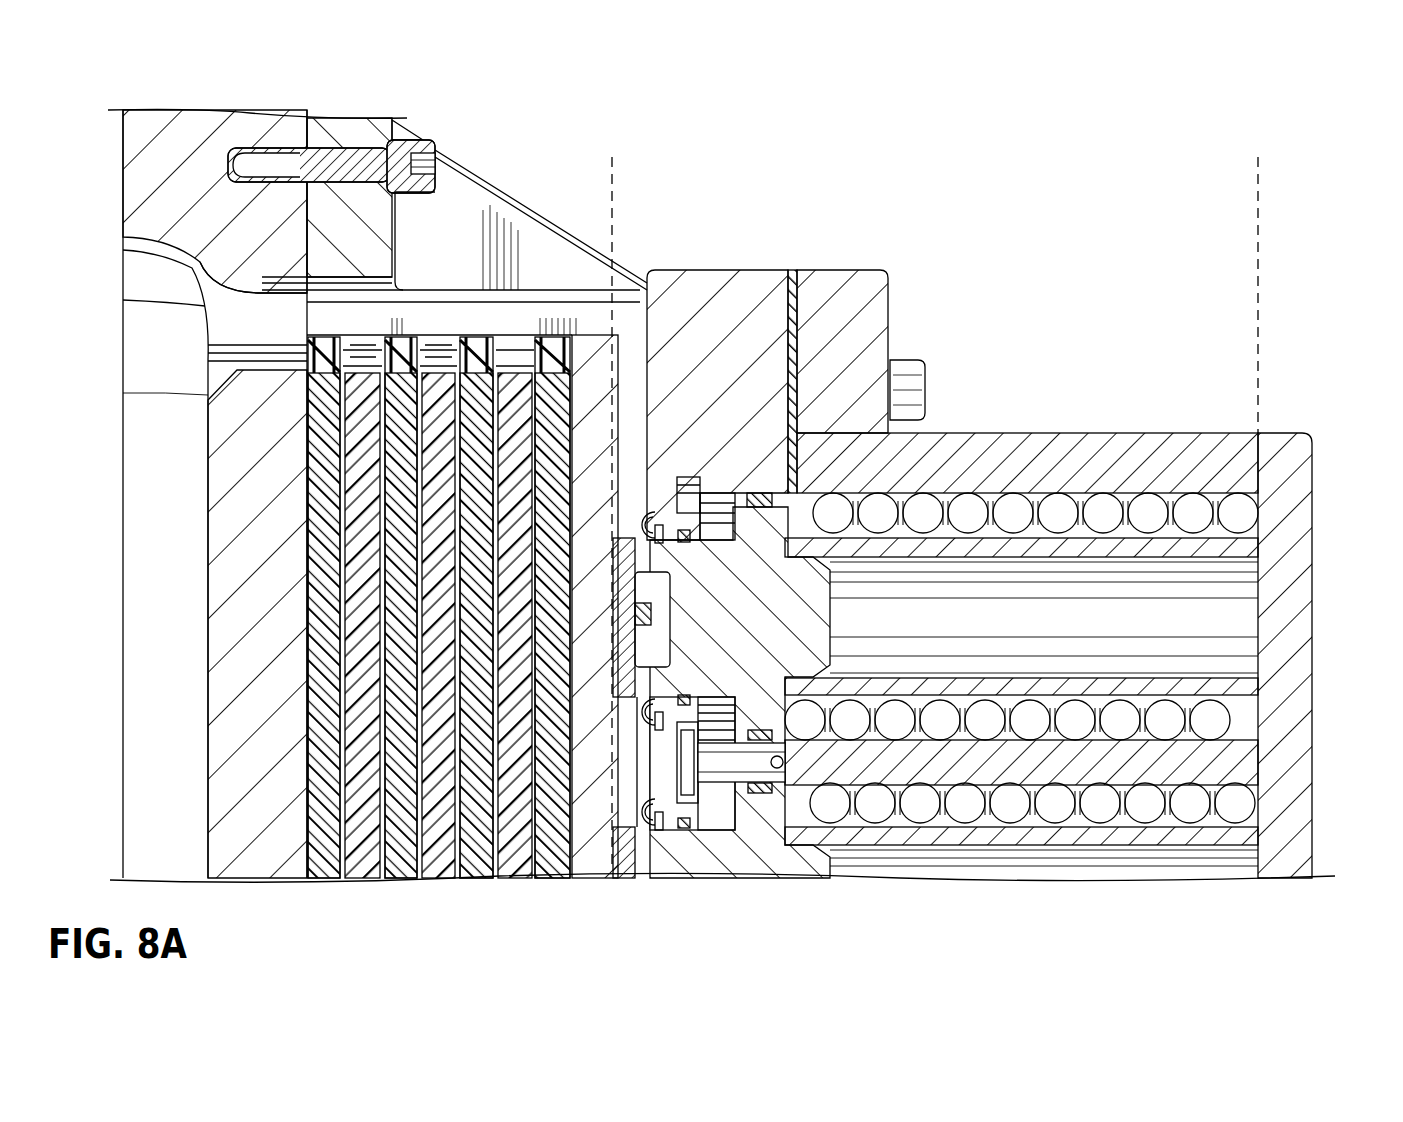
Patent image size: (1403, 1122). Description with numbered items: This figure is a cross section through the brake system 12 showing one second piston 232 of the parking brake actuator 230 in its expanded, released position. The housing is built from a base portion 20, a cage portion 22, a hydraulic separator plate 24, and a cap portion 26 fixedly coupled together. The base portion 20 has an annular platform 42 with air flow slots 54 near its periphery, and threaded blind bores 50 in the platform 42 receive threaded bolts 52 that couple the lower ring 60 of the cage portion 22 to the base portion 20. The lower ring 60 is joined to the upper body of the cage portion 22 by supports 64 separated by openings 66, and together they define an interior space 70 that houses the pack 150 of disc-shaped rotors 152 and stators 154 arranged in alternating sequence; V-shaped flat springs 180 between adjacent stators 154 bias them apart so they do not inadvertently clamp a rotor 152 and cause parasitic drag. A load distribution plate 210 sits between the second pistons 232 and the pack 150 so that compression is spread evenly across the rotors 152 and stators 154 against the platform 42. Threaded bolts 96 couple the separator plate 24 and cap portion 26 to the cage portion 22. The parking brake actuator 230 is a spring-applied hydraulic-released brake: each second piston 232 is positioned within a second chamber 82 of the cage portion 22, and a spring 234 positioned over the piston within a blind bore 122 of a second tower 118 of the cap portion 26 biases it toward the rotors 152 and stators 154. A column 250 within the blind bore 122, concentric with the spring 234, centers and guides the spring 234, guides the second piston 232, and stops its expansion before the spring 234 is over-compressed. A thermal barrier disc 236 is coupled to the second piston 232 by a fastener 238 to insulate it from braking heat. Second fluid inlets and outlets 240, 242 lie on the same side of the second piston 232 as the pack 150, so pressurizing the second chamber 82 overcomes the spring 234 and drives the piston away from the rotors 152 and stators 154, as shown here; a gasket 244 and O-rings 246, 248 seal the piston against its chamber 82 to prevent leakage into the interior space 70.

The brake system 12 is at (178, 84).
The base portion 20 is at (118, 150).
The threaded blind bores 50 is at (228, 163).
The threaded bolts 52 is at (412, 140).
The air flow slots 54 is at (198, 289).
The platform 42 is at (205, 525).
The lower ring 60 is at (345, 118).
The cage portion 22 is at (455, 162).
The supports 64 is at (535, 212).
The openings 66 is at (473, 263).
The rotors 152 is at (512, 380).
The stators 154 is at (552, 380).
The flat springs 180 is at (362, 352).
The load distribution plate 210 is at (600, 322).
The pack 150 is at (447, 547).
The parking brake actuator 230 is at (618, 150).
The hydraulic separator plate 24 is at (792, 256).
The second chambers 82 is at (758, 492).
The O-ring 248 is at (820, 290).
The threaded bolts 96 is at (915, 380).
The second towers 118 is at (1210, 440).
The blind bores 122 is at (1127, 498).
The cap portion 26 is at (1272, 428).
The springs 234 is at (1245, 515).
The columns 250 is at (1250, 668).
The second pistons 232 is at (812, 627).
The thermal barrier discs 236 is at (660, 668).
The fasteners 238 is at (652, 615).
The second fluid inlets 240 is at (690, 805).
The second fluid outlets 242 is at (712, 478).
The gaskets 244 is at (622, 530).
The O-ring 246 is at (648, 508).
The interior space 70 is at (641, 770).